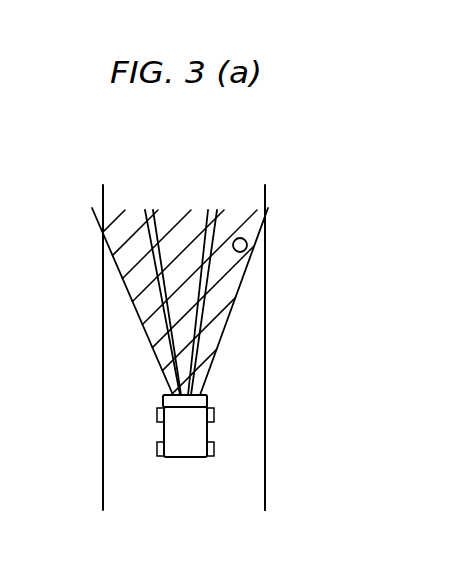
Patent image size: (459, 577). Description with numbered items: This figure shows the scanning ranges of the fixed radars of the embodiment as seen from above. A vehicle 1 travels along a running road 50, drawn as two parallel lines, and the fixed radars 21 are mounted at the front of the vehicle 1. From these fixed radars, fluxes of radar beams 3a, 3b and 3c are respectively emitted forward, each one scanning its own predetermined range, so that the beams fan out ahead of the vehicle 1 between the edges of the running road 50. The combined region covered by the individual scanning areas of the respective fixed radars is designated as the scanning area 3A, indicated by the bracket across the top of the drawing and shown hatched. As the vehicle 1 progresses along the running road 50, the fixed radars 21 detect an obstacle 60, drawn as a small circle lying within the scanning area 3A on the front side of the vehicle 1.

The vehicle 1 is at (163, 424).
The scanning area 3A is at (268, 168).
The flux of radar beams 3a is at (145, 310).
The flux of radar beams 3b is at (185, 328).
The flux of radar beams 3c is at (225, 292).
The fixed radar 21 is at (208, 398).
The running road 50 is at (267, 470).
The obstacle 60 is at (247, 245).